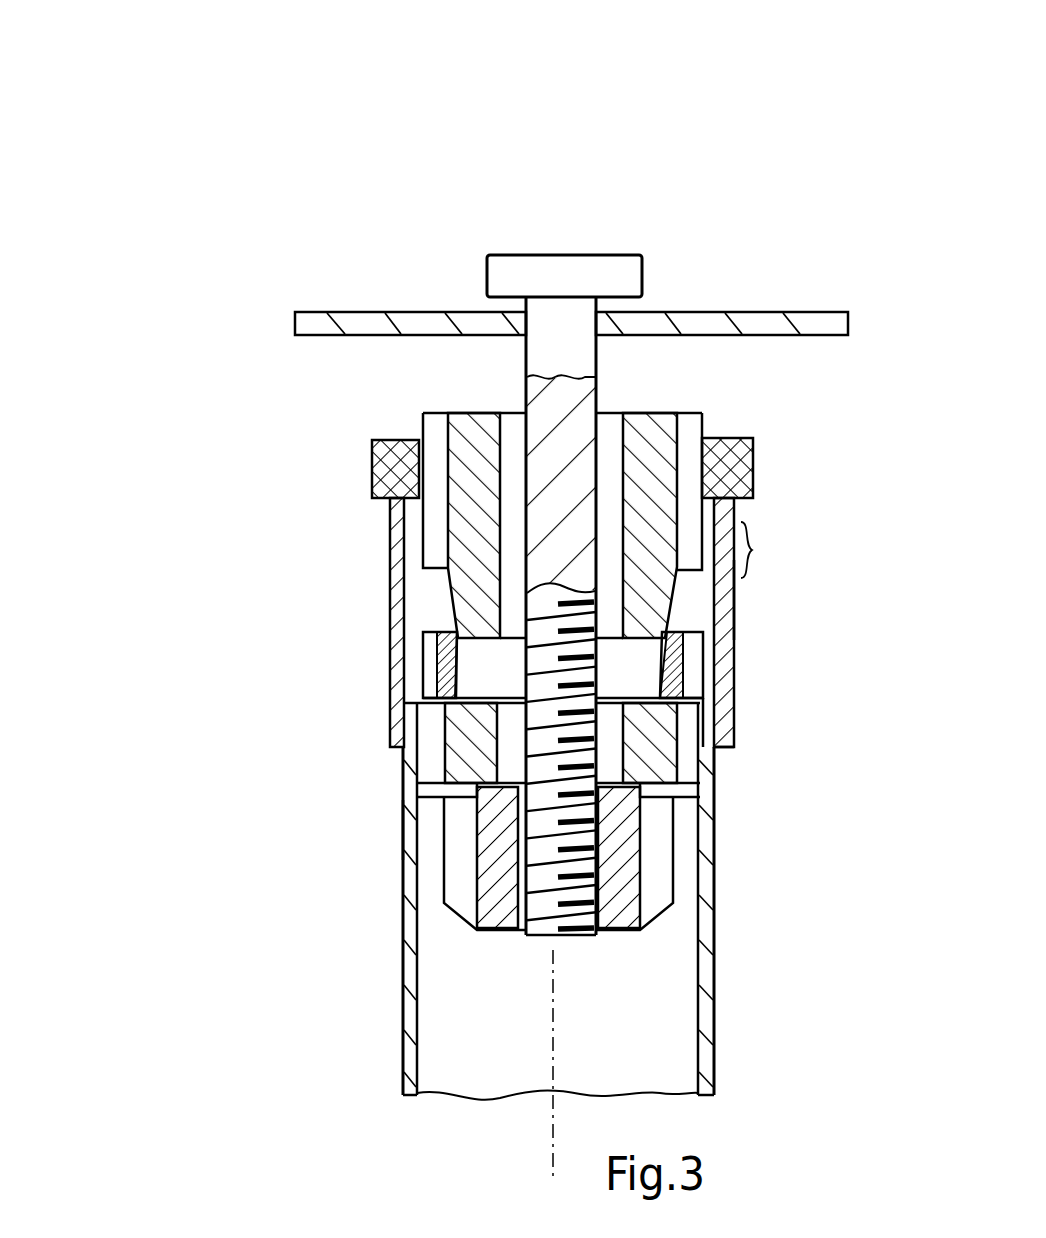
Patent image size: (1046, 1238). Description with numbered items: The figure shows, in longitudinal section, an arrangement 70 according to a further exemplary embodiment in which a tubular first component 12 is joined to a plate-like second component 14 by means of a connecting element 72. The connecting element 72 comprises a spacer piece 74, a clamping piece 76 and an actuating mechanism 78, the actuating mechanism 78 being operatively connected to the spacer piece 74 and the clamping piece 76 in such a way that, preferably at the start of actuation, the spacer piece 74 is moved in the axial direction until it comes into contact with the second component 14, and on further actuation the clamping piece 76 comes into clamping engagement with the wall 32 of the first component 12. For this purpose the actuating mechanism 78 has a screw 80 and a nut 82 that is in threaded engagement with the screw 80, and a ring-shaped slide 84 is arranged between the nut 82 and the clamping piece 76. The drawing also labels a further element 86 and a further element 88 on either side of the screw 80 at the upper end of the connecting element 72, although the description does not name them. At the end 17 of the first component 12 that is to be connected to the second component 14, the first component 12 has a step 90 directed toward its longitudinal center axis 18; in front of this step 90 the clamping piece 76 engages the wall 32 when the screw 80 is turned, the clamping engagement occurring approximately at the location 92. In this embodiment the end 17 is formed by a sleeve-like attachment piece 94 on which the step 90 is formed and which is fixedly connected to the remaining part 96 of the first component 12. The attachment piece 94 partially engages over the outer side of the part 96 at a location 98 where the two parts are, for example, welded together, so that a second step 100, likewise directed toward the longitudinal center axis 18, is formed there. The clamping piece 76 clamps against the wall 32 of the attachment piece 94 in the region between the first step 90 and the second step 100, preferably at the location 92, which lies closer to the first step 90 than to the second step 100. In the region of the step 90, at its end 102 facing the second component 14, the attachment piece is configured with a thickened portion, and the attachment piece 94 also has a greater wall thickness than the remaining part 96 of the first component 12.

The first component 12 is at (403, 983).
The second component 14 is at (357, 318).
The end 17 is at (393, 545).
The longitudinal center axis 18 is at (553, 1031).
The wall 32 is at (428, 618).
The arrangement 70 is at (155, 250).
The connecting element 72 is at (407, 355).
The spacer piece 74 is at (648, 445).
The clamping piece 76 is at (683, 655).
The actuating mechanism 78 is at (547, 232).
The screw 80 is at (560, 340).
The nut 82 is at (503, 883).
The slide 84 is at (470, 742).
The pressure piece 86 is at (436, 450).
The right flange 88 is at (685, 468).
The step 90 is at (390, 517).
The location 92 is at (752, 550).
The attachment piece 94 is at (722, 590).
The remaining part 96 is at (412, 834).
The location 98 is at (736, 732).
The second step 100 is at (736, 682).
The end 102 is at (392, 458).